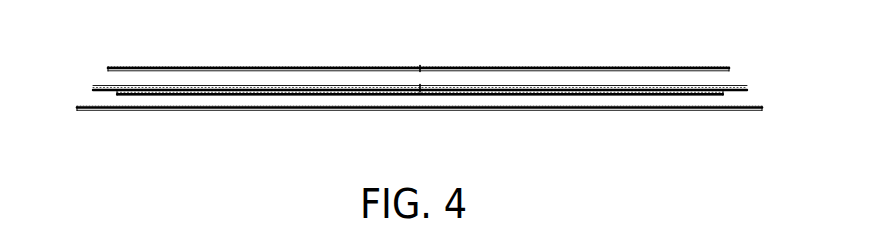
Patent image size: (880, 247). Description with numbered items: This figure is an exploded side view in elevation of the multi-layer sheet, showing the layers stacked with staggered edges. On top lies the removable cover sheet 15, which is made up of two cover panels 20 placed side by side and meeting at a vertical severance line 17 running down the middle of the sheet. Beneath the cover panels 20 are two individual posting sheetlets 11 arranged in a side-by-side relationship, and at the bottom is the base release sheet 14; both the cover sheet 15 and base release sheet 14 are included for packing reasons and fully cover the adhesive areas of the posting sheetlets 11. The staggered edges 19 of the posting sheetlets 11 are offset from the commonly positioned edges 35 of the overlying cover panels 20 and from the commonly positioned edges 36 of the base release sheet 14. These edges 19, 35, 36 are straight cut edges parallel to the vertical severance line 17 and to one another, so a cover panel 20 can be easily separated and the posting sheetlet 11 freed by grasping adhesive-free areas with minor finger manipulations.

The posting sheetlets 11 is at (136, 94).
The base release sheet 14 is at (667, 110).
The removable cover sheet 15 is at (587, 68).
The vertical severance line 17 is at (420, 86).
The staggered edges 19 is at (97, 86).
The cover panels 20 is at (305, 66).
The commonly positioned edges of the cover panels 35 is at (107, 67).
The commonly positioned edges of the base release sheet 36 is at (77, 107).